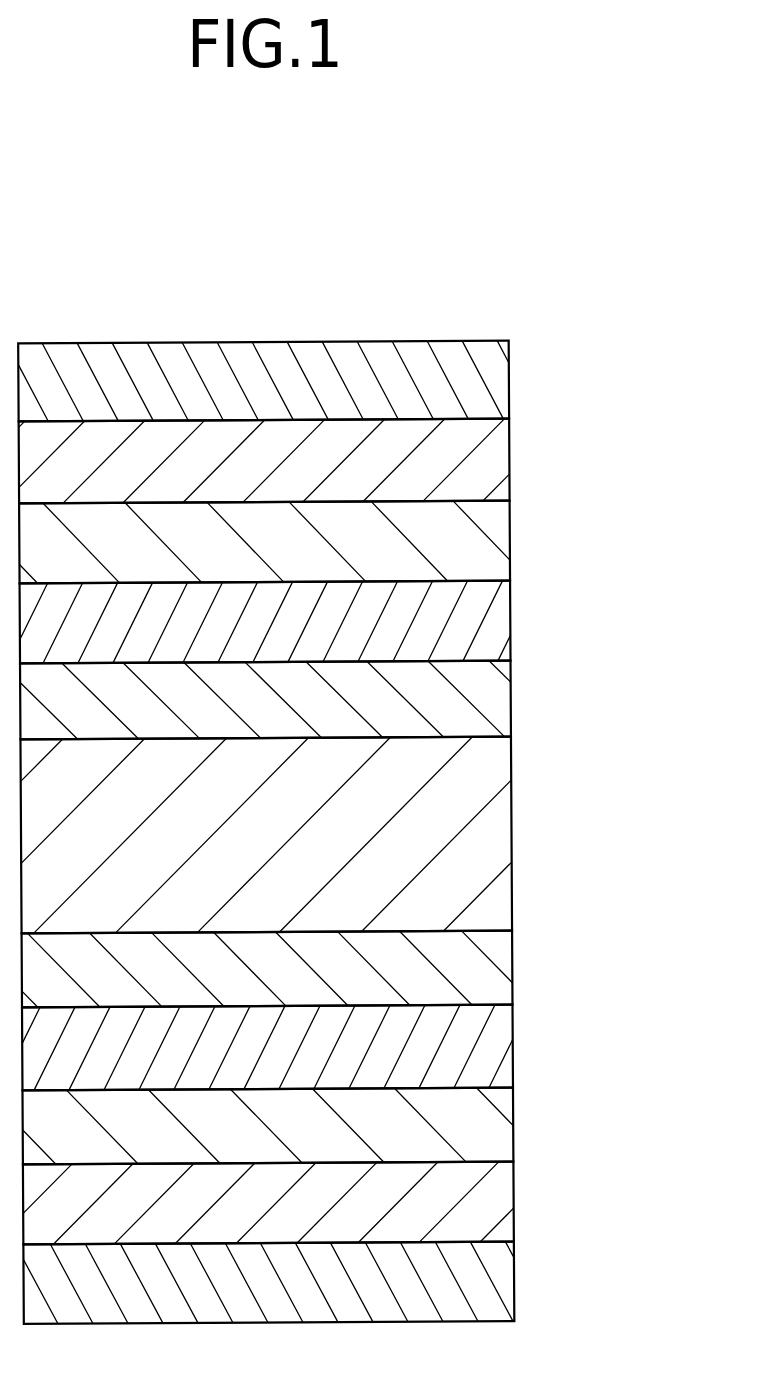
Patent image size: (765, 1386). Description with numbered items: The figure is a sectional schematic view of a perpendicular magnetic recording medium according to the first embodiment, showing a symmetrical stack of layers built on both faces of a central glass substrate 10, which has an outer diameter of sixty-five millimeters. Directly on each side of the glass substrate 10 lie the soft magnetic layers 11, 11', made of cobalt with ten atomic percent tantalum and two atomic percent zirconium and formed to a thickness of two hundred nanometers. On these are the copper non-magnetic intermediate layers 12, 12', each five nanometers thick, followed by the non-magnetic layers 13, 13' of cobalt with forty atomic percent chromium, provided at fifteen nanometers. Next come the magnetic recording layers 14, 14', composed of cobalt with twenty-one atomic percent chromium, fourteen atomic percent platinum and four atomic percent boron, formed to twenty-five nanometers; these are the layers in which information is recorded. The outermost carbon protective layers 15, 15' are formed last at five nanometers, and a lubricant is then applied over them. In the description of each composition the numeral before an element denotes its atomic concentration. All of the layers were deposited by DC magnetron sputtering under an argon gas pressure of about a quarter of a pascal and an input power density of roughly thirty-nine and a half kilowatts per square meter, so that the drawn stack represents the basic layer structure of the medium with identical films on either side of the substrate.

The glass substrate 10 is at (512, 830).
The soft magnetic layer 11 is at (326, 700).
The non-magnetic intermediate layer 12 is at (326, 622).
The non-magnetic layer 13 is at (325, 542).
The magnetic recording layer 14 is at (325, 461).
The protective layer 15 is at (325, 381).
The soft magnetic layer 11' is at (332, 969).
The non-magnetic intermediate layer 12' is at (332, 1048).
The non-magnetic layer 13' is at (332, 1126).
The magnetic recording layer 14' is at (333, 1203).
The protective layer 15' is at (333, 1283).